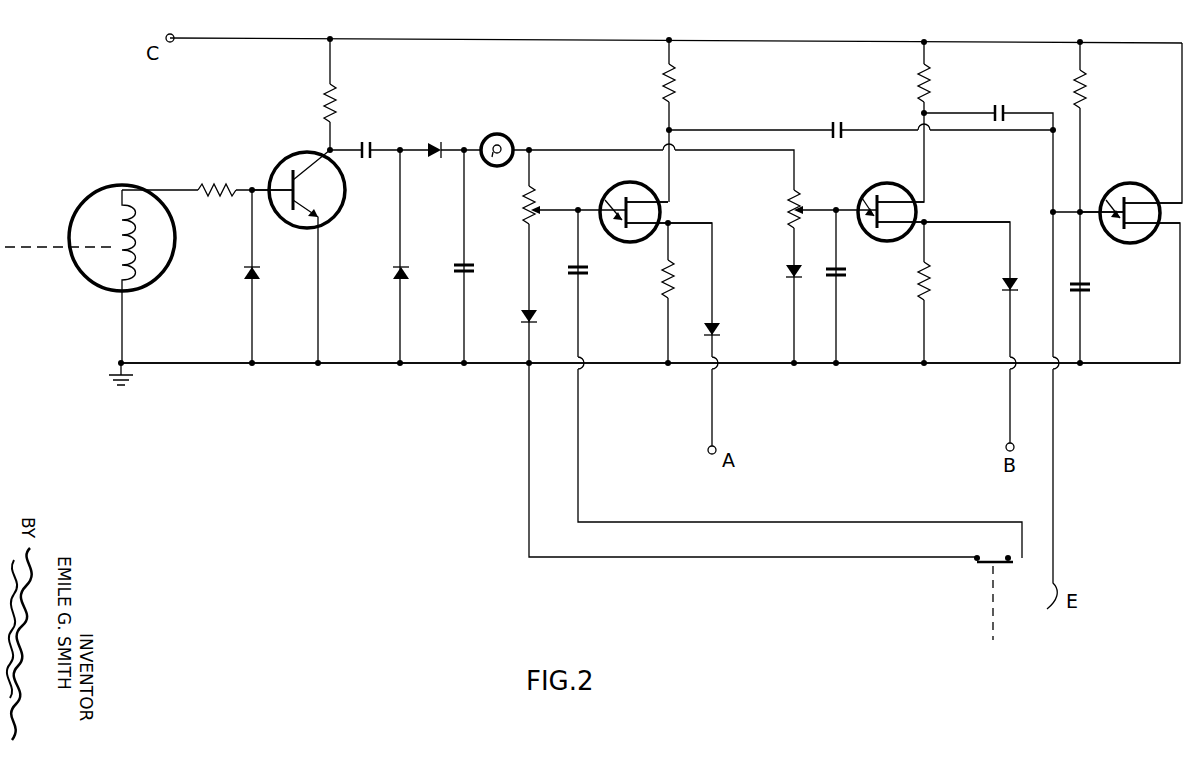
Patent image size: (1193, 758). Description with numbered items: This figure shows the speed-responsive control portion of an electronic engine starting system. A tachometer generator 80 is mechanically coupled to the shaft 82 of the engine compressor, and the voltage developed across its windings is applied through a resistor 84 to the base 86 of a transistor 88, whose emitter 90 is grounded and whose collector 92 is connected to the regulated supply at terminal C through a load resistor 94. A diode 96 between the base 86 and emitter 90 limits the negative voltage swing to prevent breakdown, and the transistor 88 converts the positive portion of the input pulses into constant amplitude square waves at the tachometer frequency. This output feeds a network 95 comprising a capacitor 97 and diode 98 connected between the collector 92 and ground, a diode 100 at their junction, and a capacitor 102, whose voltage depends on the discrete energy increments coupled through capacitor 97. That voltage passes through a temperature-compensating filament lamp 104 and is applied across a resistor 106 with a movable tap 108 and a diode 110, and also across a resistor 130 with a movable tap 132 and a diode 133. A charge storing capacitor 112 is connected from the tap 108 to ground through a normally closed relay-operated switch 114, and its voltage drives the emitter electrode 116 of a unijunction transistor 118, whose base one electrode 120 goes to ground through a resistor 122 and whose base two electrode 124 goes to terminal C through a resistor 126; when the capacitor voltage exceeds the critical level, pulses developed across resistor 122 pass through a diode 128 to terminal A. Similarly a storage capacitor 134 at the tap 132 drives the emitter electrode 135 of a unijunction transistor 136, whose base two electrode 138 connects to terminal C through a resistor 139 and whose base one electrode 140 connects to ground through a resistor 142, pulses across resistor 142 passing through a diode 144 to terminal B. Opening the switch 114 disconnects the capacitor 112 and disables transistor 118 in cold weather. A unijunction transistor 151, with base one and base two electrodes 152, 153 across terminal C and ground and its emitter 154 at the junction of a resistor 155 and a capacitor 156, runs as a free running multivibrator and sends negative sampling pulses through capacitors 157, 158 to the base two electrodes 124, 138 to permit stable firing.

The tachometer generator 80 is at (122, 186).
The shaft 82 is at (30, 250).
The resistor 84 is at (200, 188).
The base 86 is at (270, 180).
The transistor 88 is at (288, 155).
The emitter 90 is at (298, 226).
The collector 92 is at (318, 172).
The load resistor 94 is at (336, 98).
The network 95 is at (432, 338).
The diode 96 is at (246, 268).
The capacitor 97 is at (372, 142).
The diode 98 is at (396, 268).
The diode 100 is at (433, 143).
The capacitor 102 is at (460, 262).
The filament lamp 104 is at (486, 139).
The resistor 106 is at (522, 212).
The movable tap 108 is at (551, 208).
The diode 110 is at (520, 315).
The charge storing capacitor 112 is at (584, 276).
The relay-operated switch 114 is at (975, 570).
The emitter electrode 116 is at (605, 238).
The unijunction transistor 118 is at (660, 216).
The base one electrode 120 is at (636, 238).
The resistor 122 is at (664, 282).
The base two electrode 124 is at (636, 182).
The resistor 126 is at (675, 96).
The diode 128 is at (704, 328).
The resistor 130 is at (790, 203).
The movable tap 132 is at (834, 207).
The diode 133 is at (788, 266).
The storage capacitor 134 is at (840, 280).
The emitter electrode 135 is at (864, 195).
The unijunction transistor 136 is at (916, 216).
The base two electrode 138 is at (890, 182).
The resistor 139 is at (930, 96).
The base one electrode 140 is at (892, 238).
The resistor 142 is at (930, 290).
The diode 144 is at (1018, 286).
The unijunction transistor 151 is at (1112, 198).
The base one electrode 152 is at (1138, 242).
The base two electrode 153 is at (1142, 202).
The emitter 154 is at (1112, 240).
The resistor 155 is at (1086, 98).
The capacitor 156 is at (1084, 292).
The capacitor 157 is at (832, 126).
The capacitor 158 is at (998, 105).